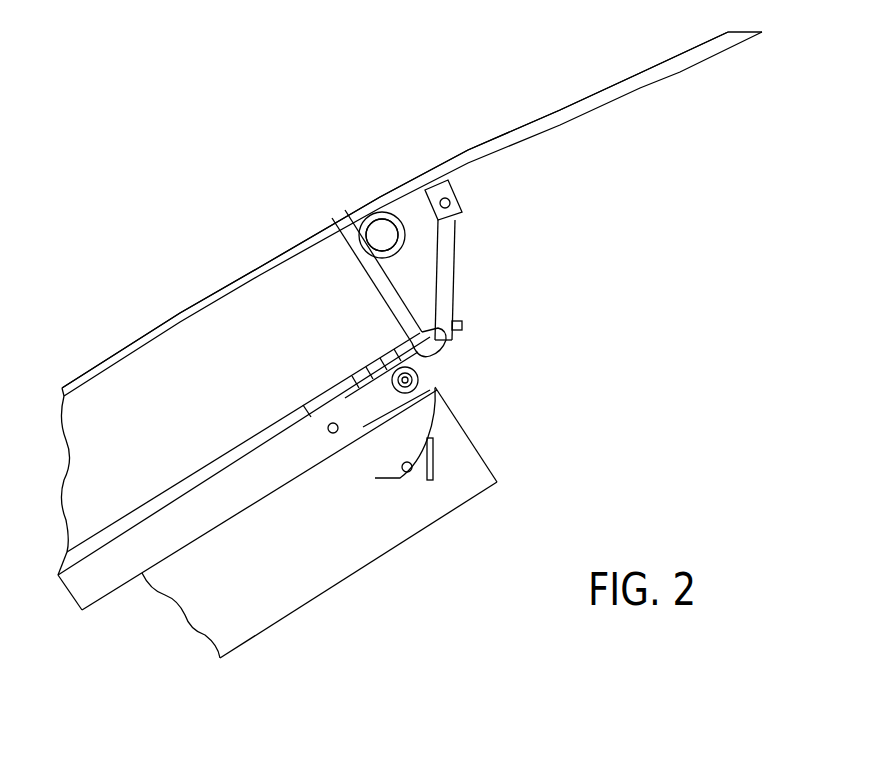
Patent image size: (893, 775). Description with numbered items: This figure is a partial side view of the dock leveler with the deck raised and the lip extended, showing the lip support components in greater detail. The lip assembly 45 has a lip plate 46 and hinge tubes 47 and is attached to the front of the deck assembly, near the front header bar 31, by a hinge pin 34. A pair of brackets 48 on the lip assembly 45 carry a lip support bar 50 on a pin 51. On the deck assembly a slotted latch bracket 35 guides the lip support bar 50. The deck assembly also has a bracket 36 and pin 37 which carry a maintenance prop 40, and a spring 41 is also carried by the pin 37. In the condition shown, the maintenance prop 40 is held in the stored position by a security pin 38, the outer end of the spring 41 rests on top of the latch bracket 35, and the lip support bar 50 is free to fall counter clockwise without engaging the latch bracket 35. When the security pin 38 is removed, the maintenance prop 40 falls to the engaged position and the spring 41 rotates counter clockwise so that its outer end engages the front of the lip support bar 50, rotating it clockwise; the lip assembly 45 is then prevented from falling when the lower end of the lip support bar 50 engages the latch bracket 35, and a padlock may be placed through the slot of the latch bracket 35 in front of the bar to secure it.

The front header bar 31 is at (355, 263).
The hinge pin 34 is at (360, 222).
The slotted latch bracket 35 is at (463, 325).
The bracket 36 is at (420, 382).
The pin 37 is at (432, 397).
The security pin 38 is at (330, 434).
The maintenance prop 40 is at (118, 590).
The spring 41 is at (450, 347).
The lip assembly 45 is at (517, 127).
The lip plate 46 is at (395, 210).
The hinge tubes 47 is at (383, 232).
The brackets 48 is at (455, 185).
The lip support bar 50 is at (456, 276).
The pin 51 is at (451, 206).